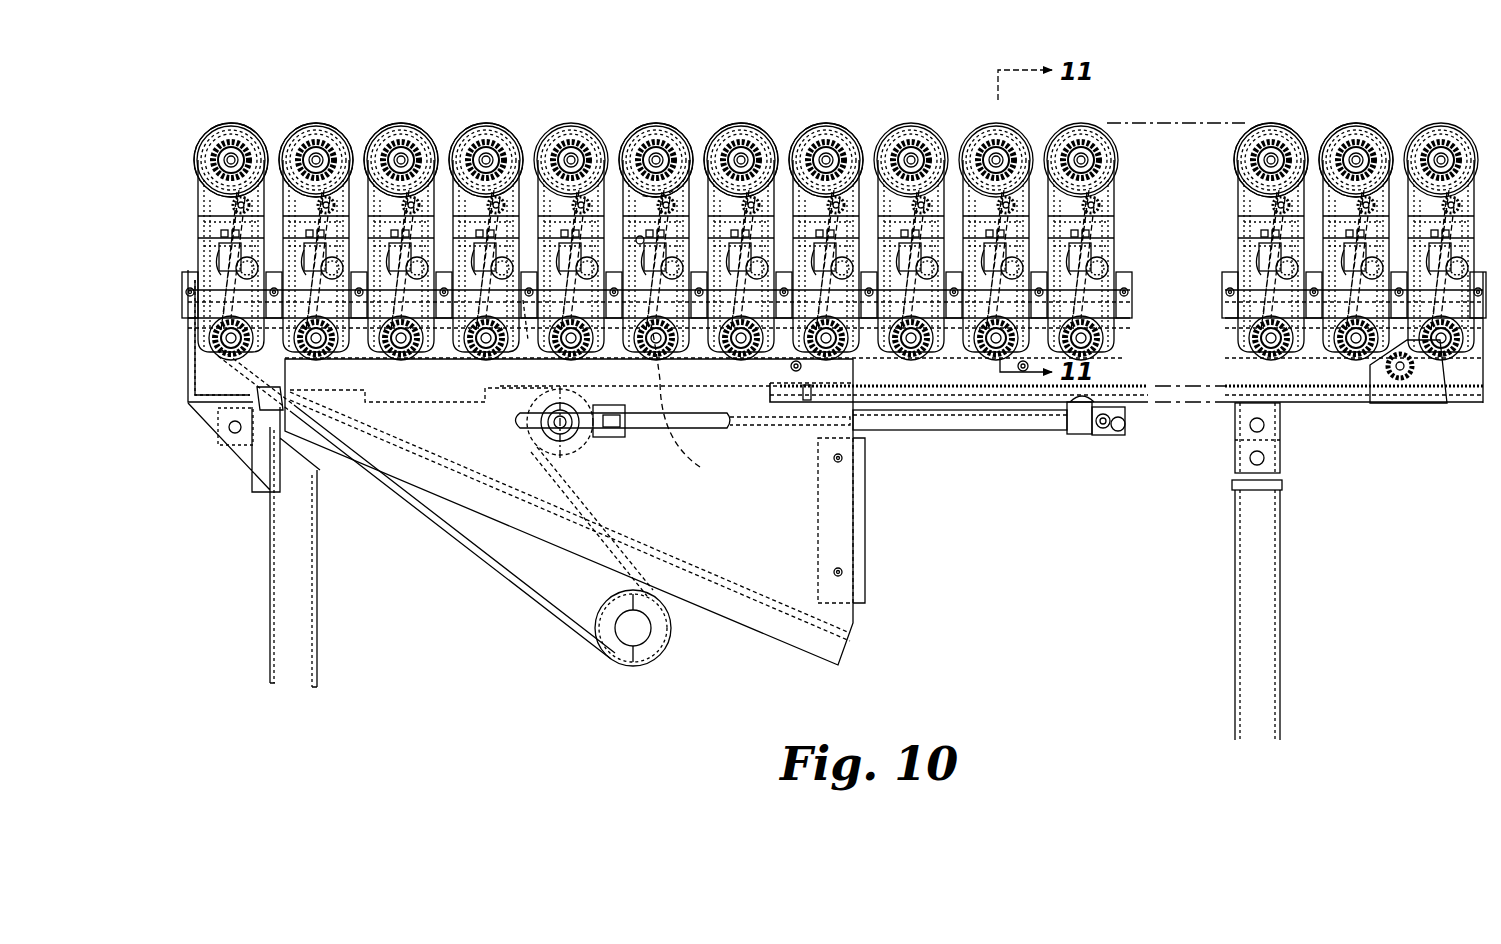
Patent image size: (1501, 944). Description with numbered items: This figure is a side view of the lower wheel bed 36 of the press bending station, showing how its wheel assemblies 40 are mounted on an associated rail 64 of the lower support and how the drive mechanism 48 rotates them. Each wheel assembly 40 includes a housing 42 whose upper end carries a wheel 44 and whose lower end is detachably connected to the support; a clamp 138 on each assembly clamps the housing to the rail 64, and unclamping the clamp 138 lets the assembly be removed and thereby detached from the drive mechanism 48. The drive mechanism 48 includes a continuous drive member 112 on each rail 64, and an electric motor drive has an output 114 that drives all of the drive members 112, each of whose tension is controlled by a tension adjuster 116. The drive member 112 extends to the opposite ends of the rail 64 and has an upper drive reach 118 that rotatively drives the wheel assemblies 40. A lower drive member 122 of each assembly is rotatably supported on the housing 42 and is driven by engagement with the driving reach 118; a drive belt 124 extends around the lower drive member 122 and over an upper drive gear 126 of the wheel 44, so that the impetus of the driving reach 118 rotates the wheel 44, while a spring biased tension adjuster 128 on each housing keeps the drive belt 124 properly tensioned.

The lower wheel bed 36 is at (1397, 124).
The wheel assembly 40 is at (231, 122).
The housing 42 is at (281, 223).
The wheel 44 is at (298, 125).
The drive mechanism 48 is at (376, 484).
The rail 64 is at (878, 360).
The continuous drive member 112 is at (362, 345).
The output 114 is at (663, 648).
The tension adjuster 116 is at (591, 455).
The upper drive reach 118 is at (523, 300).
The lower drive member 122 is at (700, 470).
The drive belt 124 is at (668, 232).
The upper drive gear 126 is at (650, 204).
The spring biased tension adjuster 128 is at (634, 234).
The clamp 138 is at (193, 291).